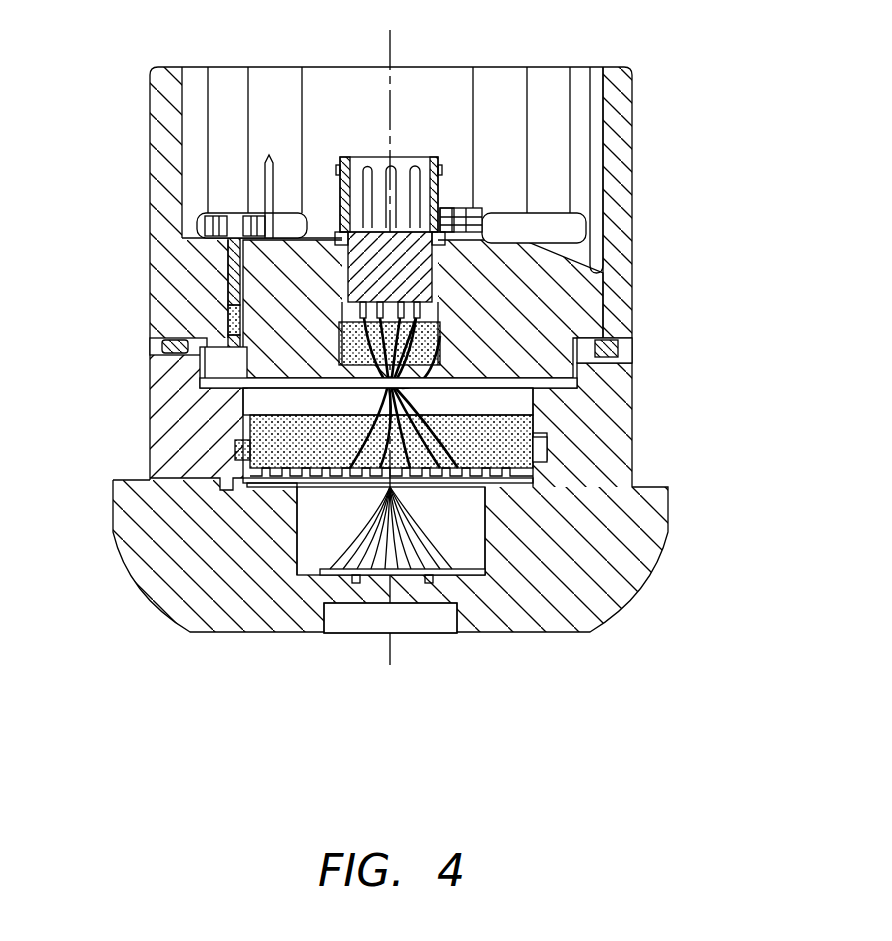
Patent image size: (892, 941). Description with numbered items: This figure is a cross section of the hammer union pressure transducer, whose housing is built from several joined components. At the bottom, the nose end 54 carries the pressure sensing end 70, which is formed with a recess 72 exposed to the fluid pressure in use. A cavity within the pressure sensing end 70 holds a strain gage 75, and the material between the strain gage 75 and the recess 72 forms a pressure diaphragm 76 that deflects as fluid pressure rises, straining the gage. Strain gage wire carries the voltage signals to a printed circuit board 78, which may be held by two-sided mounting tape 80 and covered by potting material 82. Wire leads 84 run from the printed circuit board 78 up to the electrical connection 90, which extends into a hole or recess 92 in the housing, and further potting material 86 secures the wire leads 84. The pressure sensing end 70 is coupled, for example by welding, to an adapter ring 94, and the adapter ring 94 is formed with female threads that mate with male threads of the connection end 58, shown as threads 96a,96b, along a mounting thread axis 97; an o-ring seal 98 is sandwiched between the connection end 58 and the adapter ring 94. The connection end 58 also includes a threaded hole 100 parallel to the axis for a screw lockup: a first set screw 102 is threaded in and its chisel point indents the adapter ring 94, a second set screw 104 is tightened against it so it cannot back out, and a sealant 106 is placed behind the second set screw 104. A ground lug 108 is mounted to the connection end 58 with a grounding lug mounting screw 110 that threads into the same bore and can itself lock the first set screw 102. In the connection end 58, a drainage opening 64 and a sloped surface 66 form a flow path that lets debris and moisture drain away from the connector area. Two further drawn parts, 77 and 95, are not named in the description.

The nose end 54 is at (600, 540).
The connection end 58 is at (633, 112).
The drainage opening 64 is at (588, 225).
The sloped surface 66 is at (570, 262).
The pressure sensing end 70 is at (632, 598).
The recess 72 is at (455, 603).
The strain gage 75 is at (298, 560).
The pressure diaphragm 76 is at (430, 590).
The wires 77 is at (475, 563).
The printed circuit board 78 is at (280, 465).
The two-sided mounting tape 80 is at (247, 490).
The potting material 82 is at (267, 432).
The wire leads 84 is at (373, 390).
The potting material 86 is at (440, 336).
The electrical connection 90 is at (420, 157).
The hole or recess 92 is at (440, 312).
The adapter ring 94 is at (633, 432).
The bracket 95 is at (456, 225).
The female and male threads 96a,96b is at (575, 363).
The mounting thread axis 97 is at (388, 48).
The o-ring seal 98 is at (613, 338).
The threaded hole 100 is at (225, 342).
The first set screw 102 is at (162, 348).
The second set screw 104 is at (205, 350).
The sealant 106 is at (228, 308).
The ground lug 108 is at (265, 168).
The grounding lug mounting screw 110 is at (230, 213).